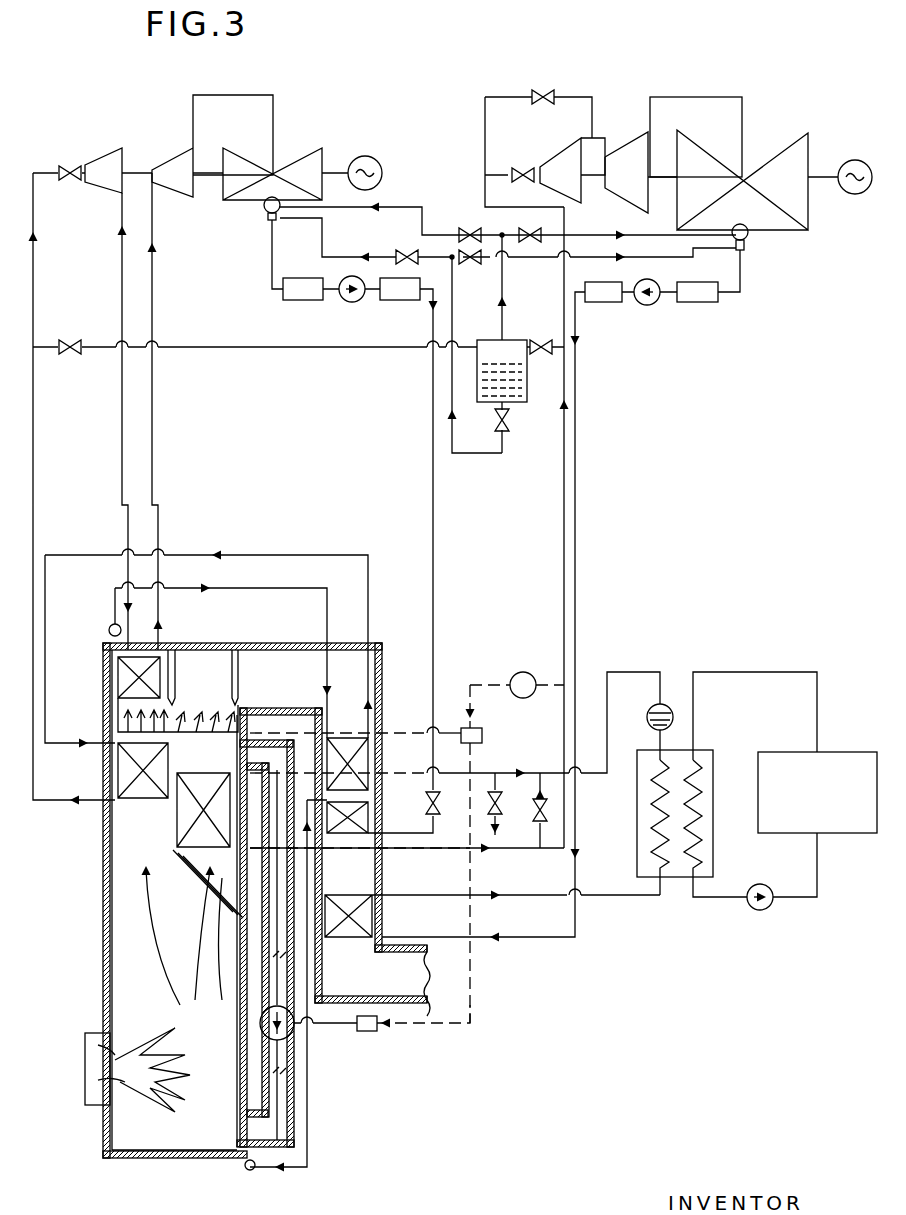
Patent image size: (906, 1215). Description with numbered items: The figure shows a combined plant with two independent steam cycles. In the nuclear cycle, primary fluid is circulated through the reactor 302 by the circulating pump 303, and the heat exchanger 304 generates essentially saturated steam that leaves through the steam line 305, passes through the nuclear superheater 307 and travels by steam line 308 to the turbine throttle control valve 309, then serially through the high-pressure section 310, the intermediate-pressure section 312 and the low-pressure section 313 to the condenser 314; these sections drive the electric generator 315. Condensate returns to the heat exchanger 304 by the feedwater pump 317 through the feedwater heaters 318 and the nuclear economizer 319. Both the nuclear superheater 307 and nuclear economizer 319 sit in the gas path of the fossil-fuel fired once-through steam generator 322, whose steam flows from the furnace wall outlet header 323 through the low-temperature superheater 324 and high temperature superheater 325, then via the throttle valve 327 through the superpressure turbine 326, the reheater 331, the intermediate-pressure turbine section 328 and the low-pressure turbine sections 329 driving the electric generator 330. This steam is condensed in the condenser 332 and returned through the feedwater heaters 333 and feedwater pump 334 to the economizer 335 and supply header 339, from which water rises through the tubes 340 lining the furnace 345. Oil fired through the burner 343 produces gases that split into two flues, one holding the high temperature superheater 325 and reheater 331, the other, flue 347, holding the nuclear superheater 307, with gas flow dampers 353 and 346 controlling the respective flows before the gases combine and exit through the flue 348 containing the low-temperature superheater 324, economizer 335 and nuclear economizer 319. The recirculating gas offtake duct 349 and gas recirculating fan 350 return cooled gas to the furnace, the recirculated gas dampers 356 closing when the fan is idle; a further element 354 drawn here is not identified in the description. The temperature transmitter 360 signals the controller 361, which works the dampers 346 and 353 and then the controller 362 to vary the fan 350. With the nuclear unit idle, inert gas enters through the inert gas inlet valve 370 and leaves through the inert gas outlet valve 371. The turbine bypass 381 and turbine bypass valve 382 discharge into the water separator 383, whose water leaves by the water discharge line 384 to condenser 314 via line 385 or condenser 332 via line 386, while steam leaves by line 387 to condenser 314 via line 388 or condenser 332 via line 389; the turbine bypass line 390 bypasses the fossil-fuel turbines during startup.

The reactor 302 is at (820, 798).
The circulating pump 303 is at (760, 910).
The heat exchanger 304 is at (705, 752).
The steam line 305 is at (625, 672).
The nuclear superheater 307 is at (180, 823).
The steam line 308 is at (575, 545).
The turbine throttle control valve 309 is at (522, 166).
The high-pressure section 310 is at (581, 200).
The intermediate-pressure section 312 is at (630, 158).
The low-pressure section 313 is at (725, 120).
The condenser 314 is at (752, 240).
The electric generator 315 is at (882, 130).
The feedwater pump 317 is at (650, 306).
The feedwater heaters 318 is at (712, 302).
The nuclear economizer 319 is at (355, 897).
The once-through steam generator 322 is at (105, 1140).
The furnace wall outlet header 323 is at (108, 627).
The low-temperature superheater 324 is at (348, 745).
The high temperature superheater 325 is at (118, 773).
The superpressure turbine 326 is at (112, 150).
The throttle valve 327 is at (70, 165).
The intermediate-pressure turbine section 328 is at (185, 160).
The low-pressure turbine sections 329 is at (262, 162).
The electric generator 330 is at (365, 155).
The reheater 331 is at (118, 672).
The condenser 332 is at (262, 212).
The feedwater heaters 333 is at (295, 298).
The feedwater pump 334 is at (350, 302).
The economizer 335 is at (355, 812).
The supply header 339 is at (247, 1172).
The tubes 340 is at (110, 855).
The burner 343 is at (85, 1053).
The furnace 345 is at (160, 1005).
The gas flow dampers 346 is at (210, 692).
The flue 347 is at (210, 935).
The flue 348 is at (358, 665).
The recirculating gas offtake duct 349 is at (305, 725).
The gas recirculating fan 350 is at (290, 1035).
The gas flow dampers 353 is at (118, 712).
The pipe 354 is at (283, 960).
The recirculated gas dampers 356 is at (287, 1078).
The temperature transmitter 360 is at (530, 673).
The controller 361 is at (482, 733).
The controller 362 is at (378, 1032).
The inert gas inlet valve 370 is at (535, 825).
The inert gas outlet valve 371 is at (500, 790).
The turbine bypass 381 is at (555, 345).
The turbine bypass valve 382 is at (542, 360).
The water separator 383 is at (512, 425).
The water discharge line 384 is at (485, 458).
The line 385 is at (660, 258).
The line 386 is at (333, 230).
The line 387 is at (505, 278).
The line 388 is at (485, 232).
The line 389 is at (470, 228).
The turbine bypass line 390 is at (300, 350).